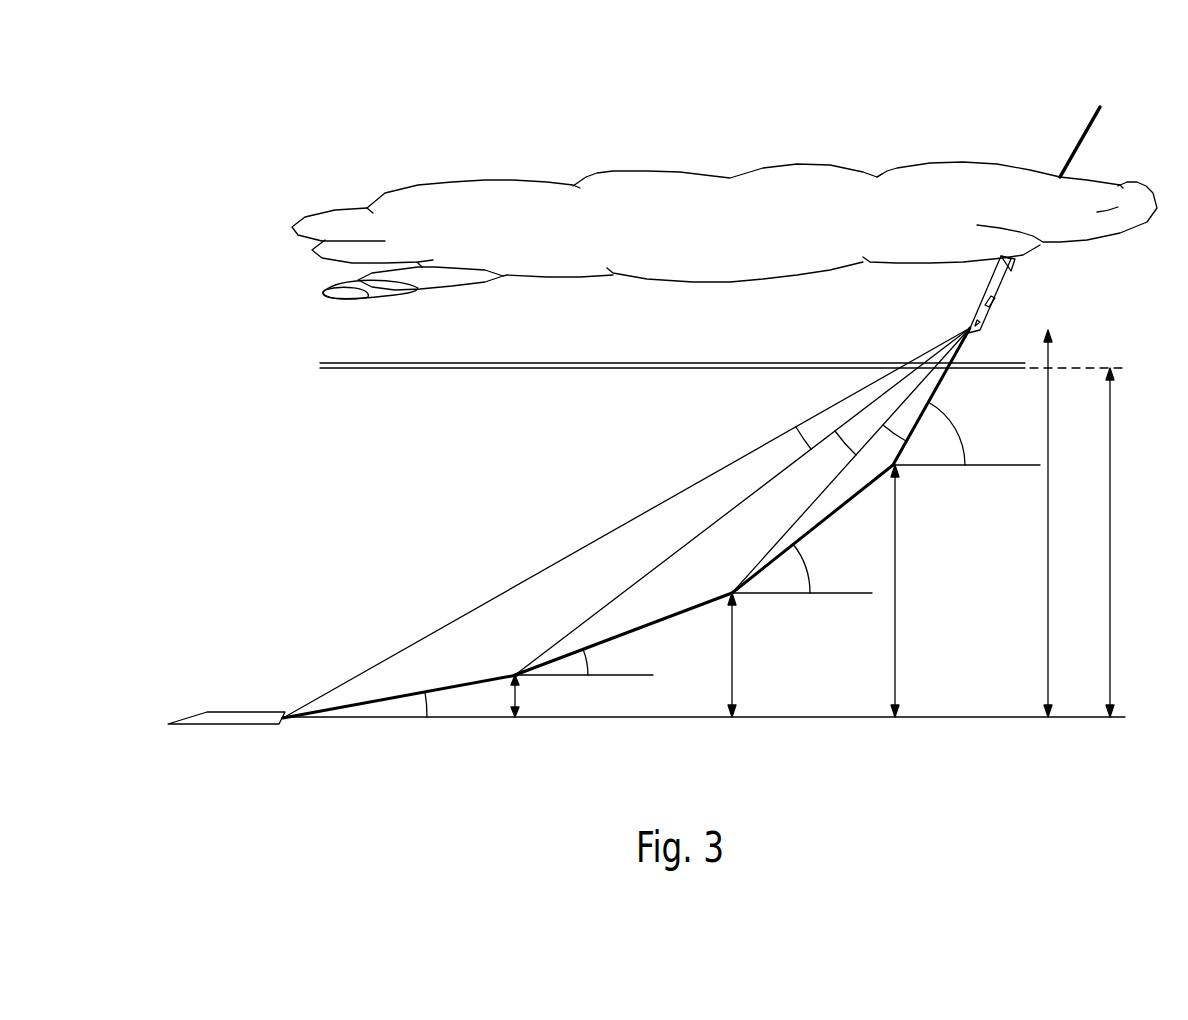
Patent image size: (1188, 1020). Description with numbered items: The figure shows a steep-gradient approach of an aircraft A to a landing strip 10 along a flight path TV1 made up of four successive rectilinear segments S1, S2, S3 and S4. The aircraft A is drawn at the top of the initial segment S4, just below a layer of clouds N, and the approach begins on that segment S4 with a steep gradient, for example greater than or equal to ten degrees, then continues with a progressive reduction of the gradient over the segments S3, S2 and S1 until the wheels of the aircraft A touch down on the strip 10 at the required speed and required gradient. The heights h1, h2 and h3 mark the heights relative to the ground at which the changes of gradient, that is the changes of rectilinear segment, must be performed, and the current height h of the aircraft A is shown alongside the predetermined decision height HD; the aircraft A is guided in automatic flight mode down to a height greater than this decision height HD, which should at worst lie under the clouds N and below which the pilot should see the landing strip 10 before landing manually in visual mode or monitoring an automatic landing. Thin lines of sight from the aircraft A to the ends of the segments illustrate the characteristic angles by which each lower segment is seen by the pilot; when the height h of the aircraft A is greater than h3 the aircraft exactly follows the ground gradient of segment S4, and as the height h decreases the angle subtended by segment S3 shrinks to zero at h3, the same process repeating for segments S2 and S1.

The flight path TV1 is at (1058, 148).
The aircraft A is at (988, 300).
The clouds N is at (692, 282).
The landing strip 10 is at (237, 722).
The rectilinear segment S1 is at (466, 684).
The rectilinear segment S2 is at (675, 610).
The rectilinear segment S3 is at (823, 521).
The rectilinear segment S4 is at (945, 375).
The height of the aircraft h is at (1055, 523).
The decision height HD is at (1127, 542).
The height h1 is at (531, 696).
The height h2 is at (746, 655).
The height h3 is at (911, 591).